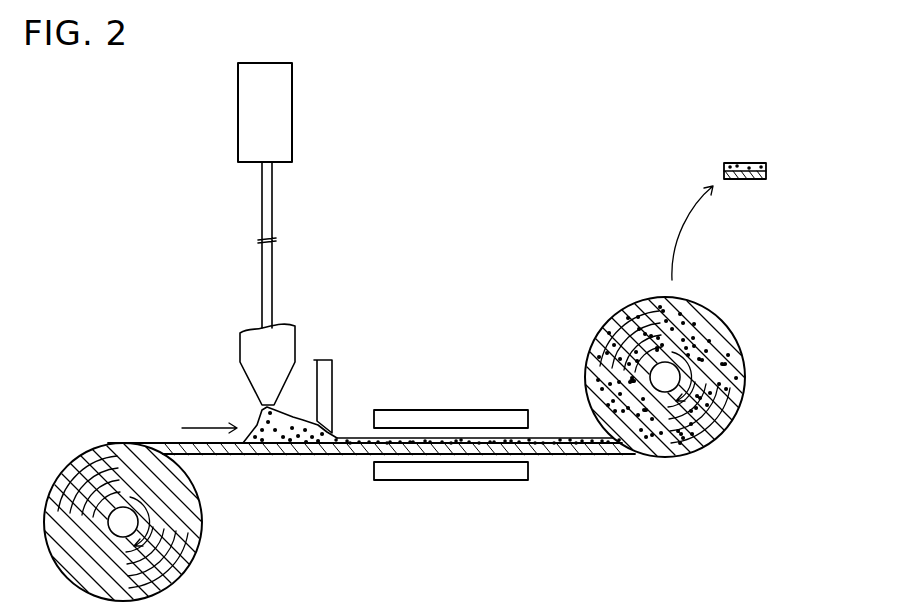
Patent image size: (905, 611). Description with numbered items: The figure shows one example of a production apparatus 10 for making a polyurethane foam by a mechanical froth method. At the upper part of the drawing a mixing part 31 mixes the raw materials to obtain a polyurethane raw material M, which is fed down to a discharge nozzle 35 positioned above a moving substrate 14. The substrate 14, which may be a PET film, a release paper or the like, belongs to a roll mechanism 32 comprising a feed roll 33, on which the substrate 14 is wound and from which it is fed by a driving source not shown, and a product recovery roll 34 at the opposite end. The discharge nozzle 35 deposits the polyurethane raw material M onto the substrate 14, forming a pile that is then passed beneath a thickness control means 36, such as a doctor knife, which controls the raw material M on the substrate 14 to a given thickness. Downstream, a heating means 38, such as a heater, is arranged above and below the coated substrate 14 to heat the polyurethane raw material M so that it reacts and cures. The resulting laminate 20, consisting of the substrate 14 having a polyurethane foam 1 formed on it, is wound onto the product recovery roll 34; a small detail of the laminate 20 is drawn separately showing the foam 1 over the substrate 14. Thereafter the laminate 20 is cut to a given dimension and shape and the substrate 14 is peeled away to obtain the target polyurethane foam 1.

The production apparatus 10 is at (147, 207).
The mixing part 31 is at (292, 107).
The discharge nozzle 35 is at (288, 348).
The thickness control means 36 is at (326, 383).
The polyurethane raw material M is at (257, 427).
The substrate 14 is at (175, 443).
The polyurethane foam 1 is at (566, 440).
The heating means 38 is at (455, 415).
The roll mechanism 32 is at (114, 482).
The feed roll 33 is at (110, 443).
The product recovery roll 34 is at (723, 335).
The laminate 20 is at (714, 151).